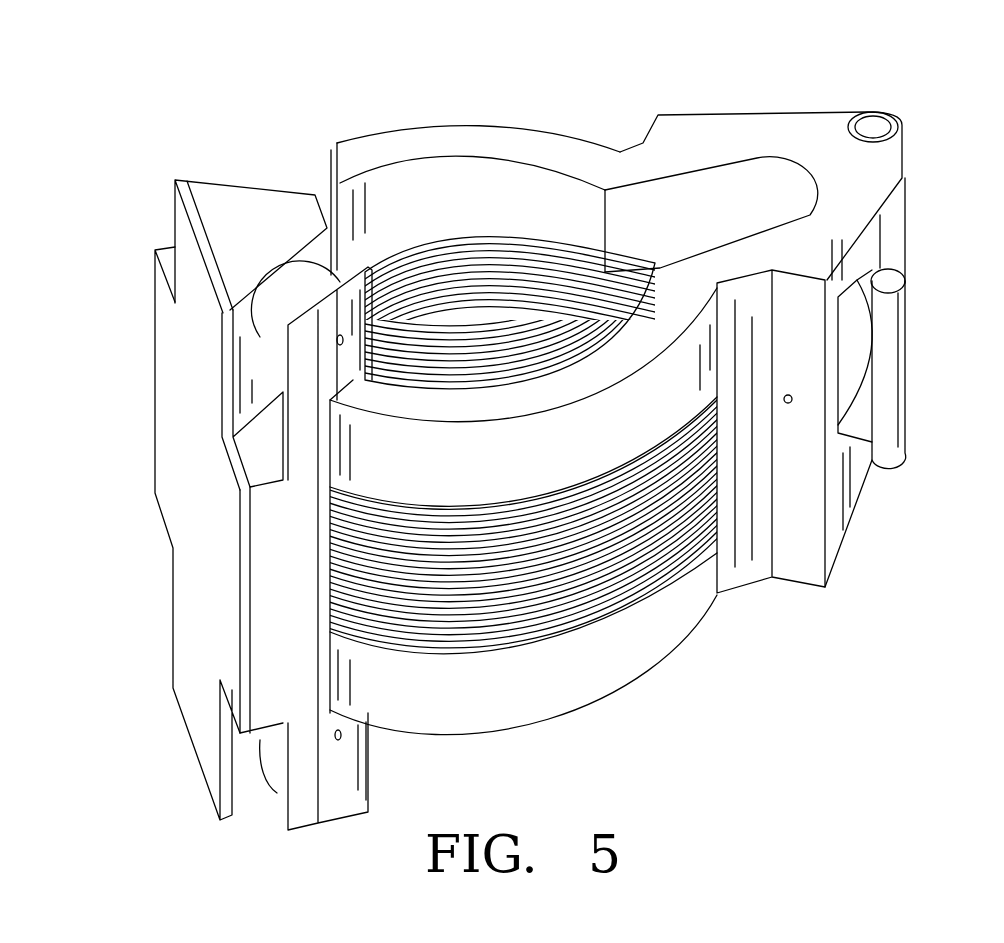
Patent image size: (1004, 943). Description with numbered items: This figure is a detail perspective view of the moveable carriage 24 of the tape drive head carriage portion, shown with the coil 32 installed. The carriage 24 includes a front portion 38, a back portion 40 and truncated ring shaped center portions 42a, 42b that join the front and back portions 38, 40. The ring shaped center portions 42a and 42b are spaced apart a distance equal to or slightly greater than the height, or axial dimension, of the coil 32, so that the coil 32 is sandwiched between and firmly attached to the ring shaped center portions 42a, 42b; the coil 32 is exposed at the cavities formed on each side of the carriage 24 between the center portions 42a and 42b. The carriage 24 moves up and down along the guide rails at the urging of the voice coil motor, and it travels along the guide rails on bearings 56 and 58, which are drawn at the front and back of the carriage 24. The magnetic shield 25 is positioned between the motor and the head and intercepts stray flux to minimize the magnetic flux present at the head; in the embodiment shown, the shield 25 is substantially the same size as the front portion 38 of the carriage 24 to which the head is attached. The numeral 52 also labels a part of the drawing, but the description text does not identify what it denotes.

The carriage 24 is at (600, 88).
The magnetic shield 25 is at (175, 410).
The coil 32 is at (670, 548).
The front portion 38 is at (200, 180).
The back portion 40 is at (822, 128).
The center portion 42a is at (470, 128).
The center portion 42b is at (665, 651).
The side bracket 52 is at (906, 246).
The bearing 56 is at (288, 290).
The bearing 58 is at (876, 342).